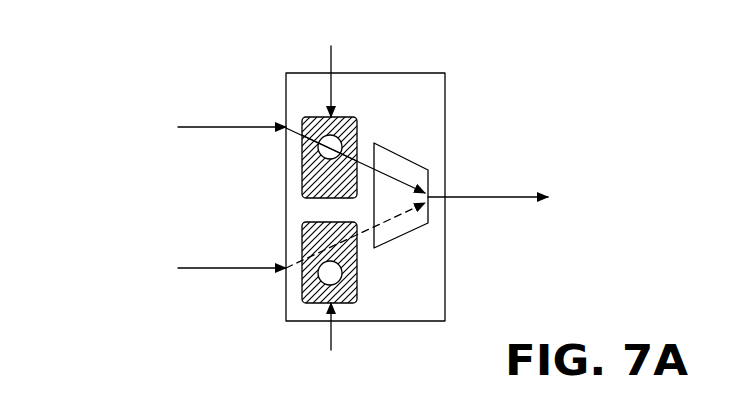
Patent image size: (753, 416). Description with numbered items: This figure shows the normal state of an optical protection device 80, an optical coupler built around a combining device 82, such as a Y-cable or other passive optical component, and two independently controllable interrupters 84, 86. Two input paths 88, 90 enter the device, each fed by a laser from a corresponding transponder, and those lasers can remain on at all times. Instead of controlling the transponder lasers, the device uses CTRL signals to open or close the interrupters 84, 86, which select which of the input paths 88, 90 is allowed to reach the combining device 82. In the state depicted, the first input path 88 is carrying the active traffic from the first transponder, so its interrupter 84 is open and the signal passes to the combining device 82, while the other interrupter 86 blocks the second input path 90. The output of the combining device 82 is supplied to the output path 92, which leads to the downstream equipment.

The optical protection device 80 is at (412, 321).
The combining device 82 is at (410, 155).
The interrupter 84 is at (345, 116).
The interrupter 86 is at (358, 275).
The input path 88 is at (227, 130).
The input path 90 is at (228, 270).
The output path 92 is at (500, 195).